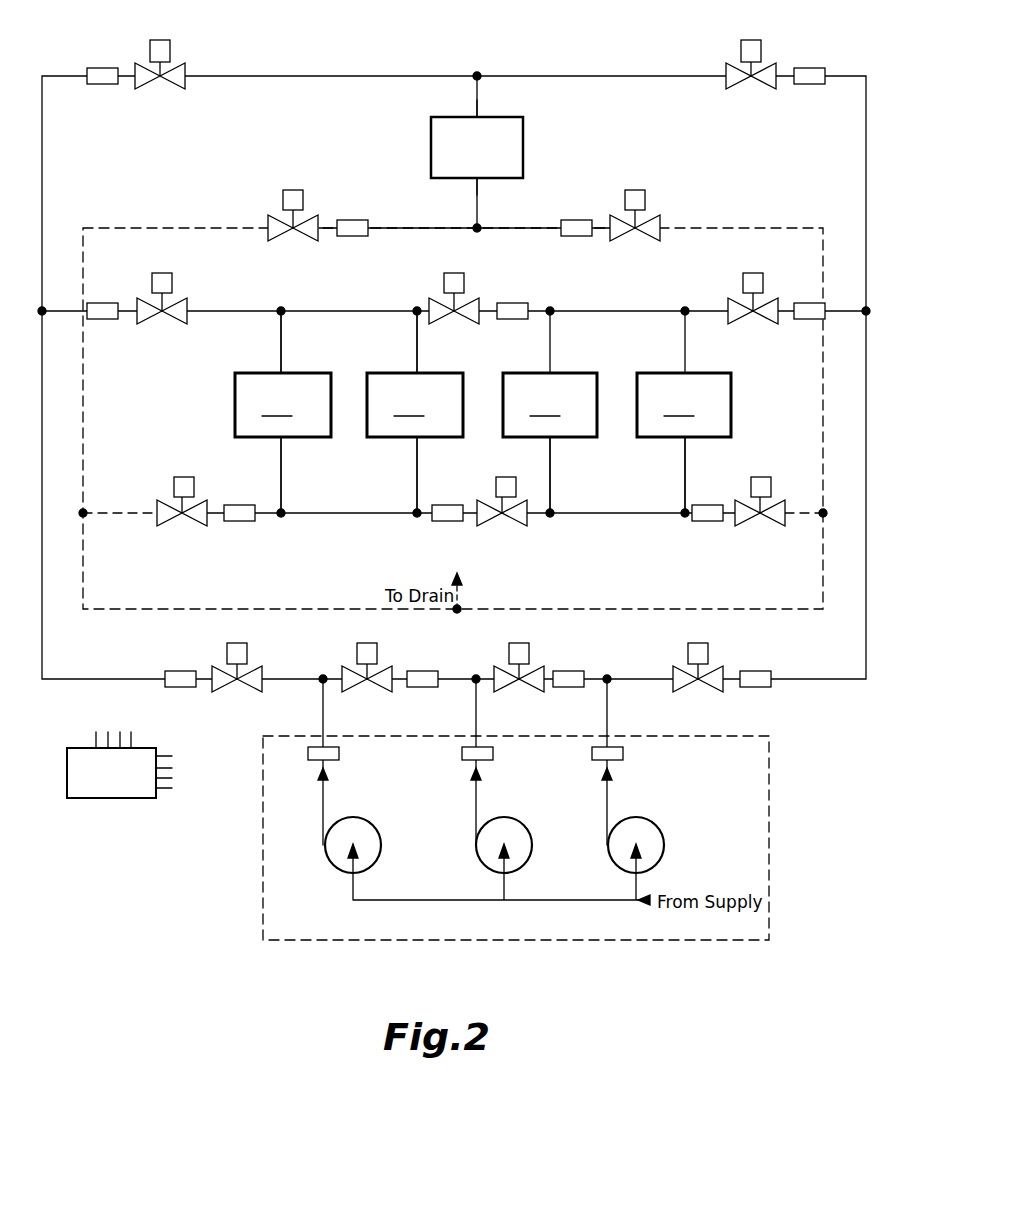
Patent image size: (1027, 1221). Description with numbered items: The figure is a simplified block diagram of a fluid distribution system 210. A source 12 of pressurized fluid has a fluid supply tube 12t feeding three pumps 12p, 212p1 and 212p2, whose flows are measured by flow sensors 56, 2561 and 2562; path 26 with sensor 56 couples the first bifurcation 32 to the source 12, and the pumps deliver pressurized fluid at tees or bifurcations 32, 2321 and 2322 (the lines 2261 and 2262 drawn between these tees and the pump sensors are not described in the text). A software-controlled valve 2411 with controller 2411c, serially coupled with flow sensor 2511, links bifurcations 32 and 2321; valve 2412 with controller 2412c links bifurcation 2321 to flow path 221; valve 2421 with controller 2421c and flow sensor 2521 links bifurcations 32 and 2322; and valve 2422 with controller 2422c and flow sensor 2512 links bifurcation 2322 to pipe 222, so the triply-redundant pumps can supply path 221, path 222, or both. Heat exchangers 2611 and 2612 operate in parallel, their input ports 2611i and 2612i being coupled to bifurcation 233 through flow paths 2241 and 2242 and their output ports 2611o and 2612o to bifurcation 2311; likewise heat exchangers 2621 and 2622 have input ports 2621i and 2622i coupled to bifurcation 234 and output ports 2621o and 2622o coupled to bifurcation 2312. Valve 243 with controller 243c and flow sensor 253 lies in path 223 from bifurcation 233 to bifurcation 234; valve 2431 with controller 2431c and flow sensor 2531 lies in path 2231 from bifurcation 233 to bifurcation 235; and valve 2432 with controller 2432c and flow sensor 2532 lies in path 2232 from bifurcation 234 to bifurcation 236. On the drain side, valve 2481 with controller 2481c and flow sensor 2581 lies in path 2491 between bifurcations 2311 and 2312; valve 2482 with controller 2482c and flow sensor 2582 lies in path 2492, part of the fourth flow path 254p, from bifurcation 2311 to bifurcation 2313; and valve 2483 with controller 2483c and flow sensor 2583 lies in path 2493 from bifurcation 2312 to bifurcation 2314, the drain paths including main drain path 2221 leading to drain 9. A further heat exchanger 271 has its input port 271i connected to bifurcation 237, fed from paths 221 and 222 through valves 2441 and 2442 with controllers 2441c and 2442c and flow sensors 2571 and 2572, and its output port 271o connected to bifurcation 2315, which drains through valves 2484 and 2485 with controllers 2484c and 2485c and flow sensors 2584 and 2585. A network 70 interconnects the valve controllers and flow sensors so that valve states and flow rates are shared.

The controller 2441c is at (158, 40).
The software-controlled valve 2441 is at (170, 84).
The flow sensor 2571 is at (103, 84).
The tee or bifurcation 237 is at (477, 76).
The input port 271i is at (480, 108).
The heat exchanger 271 is at (523, 150).
The output port 271o is at (480, 182).
The tee or bifurcation 2315 is at (475, 226).
The controller 2442c is at (750, 40).
The software-controlled valve 2442 is at (742, 84).
The flow sensor 2572 is at (810, 84).
The software-controlled valve 2484 is at (268, 218).
The controller 2484c is at (292, 190).
The flow sensor 2584 is at (352, 236).
The software-controlled valve 2485 is at (660, 218).
The controller 2485c is at (634, 190).
The flow sensor 2585 is at (576, 236).
The tee or bifurcation 235 is at (42, 311).
The flow sensor 2531 is at (103, 303).
The software-controlled valve 2431 is at (170, 322).
The controller 2431c is at (161, 273).
The path 2231 is at (193, 350).
The drain path 2221 is at (83, 428).
The tee or bifurcation 233 is at (281, 311).
The fluid flow path 2241 is at (281, 350).
The fluid flow path 2242 is at (417, 331).
The input port 2611i is at (278, 370).
The heat exchanger 2611 is at (283, 405).
The output port 2611o is at (279, 444).
The input port 2612i is at (414, 370).
The heat exchanger 2612 is at (415, 405).
The output port 2612o is at (415, 444).
The software-controlled valve 243 is at (429, 300).
The controller 243c is at (453, 273).
The flow sensor 253 is at (513, 303).
The path 223 is at (531, 323).
The input port 2621i is at (550, 370).
The heat exchanger 2621 is at (550, 405).
The output port 2621o is at (548, 444).
The input port 2622i is at (685, 370).
The heat exchanger 2622 is at (684, 405).
The output port 2622o is at (683, 444).
The tee or bifurcation 234 is at (685, 311).
The software-controlled valve 2432 is at (760, 322).
The controller 2432c is at (752, 273).
The flow sensor 2532 is at (800, 303).
The tee or bifurcation 236 is at (866, 311).
The path 2232 is at (821, 350).
The software-controlled valve 2482 is at (185, 524).
The controller 2481c is at (174, 487).
The flow sensor 2582 is at (240, 521).
The tee or bifurcation 2313 is at (83, 513).
The path 2492 is at (280, 558).
The fourth fluid flow path 254p is at (322, 609).
The tee or bifurcation 2311 is at (417, 513).
The flow sensor 2581 is at (447, 521).
The software-controlled valve 2481 is at (508, 524).
The controller 2482c is at (496, 487).
The tee or bifurcation 2312 is at (550, 506).
The path 2491 is at (544, 556).
The drain 9 is at (424, 575).
The flow sensor 2583 is at (707, 521).
The software-controlled valve 2483 is at (766, 524).
The controller 2483c is at (751, 487).
The tee or bifurcation 2314 is at (823, 513).
The path 2493 is at (792, 560).
The flow path 221 is at (42, 652).
The fluid path or pipe 222 is at (866, 637).
The flow sensor 2512 is at (181, 687).
The software-controlled valve 2412 is at (247, 690).
The controller 2412c is at (227, 651).
The tee or bifurcation 2321 is at (323, 679).
The pump line 2261 is at (323, 700).
The software-controlled valve 2411 is at (377, 690).
The controller 2411c is at (368, 631).
The flow sensor 2511 is at (424, 659).
The tee or bifurcation 32 is at (476, 679).
The sixth fluid flow path 26 is at (476, 700).
The software-controlled valve 2421 is at (529, 690).
The controller 2421c is at (537, 633).
The flow sensor 2521 is at (569, 687).
The tee or bifurcation 2322 is at (617, 669).
The pump line 2262 is at (607, 700).
The software-controlled valve 2422 is at (708, 690).
The controller 2422c is at (706, 643).
The flow sensor 2561 is at (339, 753).
The flow sensor 56 is at (493, 753).
The flow sensor 2562 is at (623, 753).
The pump 212p1 is at (380, 838).
The pump 12p is at (531, 838).
The pump 212p2 is at (663, 838).
The source of pressurized fluid 12 is at (263, 896).
The fluid supply tube 12t is at (650, 904).
The network 70 is at (78, 748).
The fluid distribution system 210 is at (213, 817).